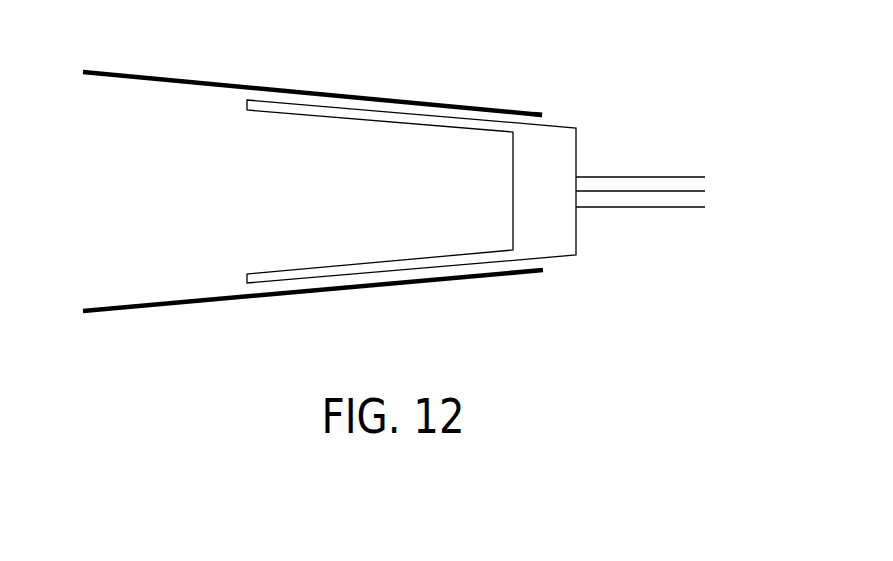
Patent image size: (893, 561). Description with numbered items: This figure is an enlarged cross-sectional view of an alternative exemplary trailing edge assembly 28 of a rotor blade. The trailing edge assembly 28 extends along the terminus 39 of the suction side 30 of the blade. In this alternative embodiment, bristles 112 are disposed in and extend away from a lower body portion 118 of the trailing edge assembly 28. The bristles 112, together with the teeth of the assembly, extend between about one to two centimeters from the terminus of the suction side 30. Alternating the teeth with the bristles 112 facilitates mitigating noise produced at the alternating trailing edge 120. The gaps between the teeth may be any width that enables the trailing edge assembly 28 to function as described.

The trailing edge assembly 28 is at (628, 63).
The suction side 30 is at (177, 78).
The terminus 39 is at (542, 108).
The lower body portion 118 is at (555, 153).
The alternating trailing edge 120 is at (696, 227).
The bristles 112 is at (647, 208).